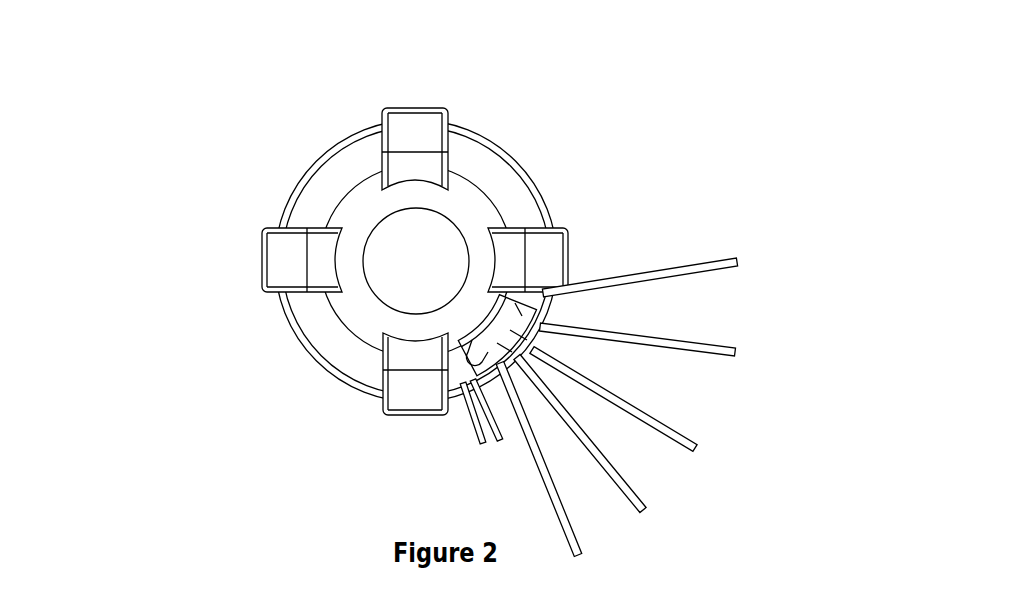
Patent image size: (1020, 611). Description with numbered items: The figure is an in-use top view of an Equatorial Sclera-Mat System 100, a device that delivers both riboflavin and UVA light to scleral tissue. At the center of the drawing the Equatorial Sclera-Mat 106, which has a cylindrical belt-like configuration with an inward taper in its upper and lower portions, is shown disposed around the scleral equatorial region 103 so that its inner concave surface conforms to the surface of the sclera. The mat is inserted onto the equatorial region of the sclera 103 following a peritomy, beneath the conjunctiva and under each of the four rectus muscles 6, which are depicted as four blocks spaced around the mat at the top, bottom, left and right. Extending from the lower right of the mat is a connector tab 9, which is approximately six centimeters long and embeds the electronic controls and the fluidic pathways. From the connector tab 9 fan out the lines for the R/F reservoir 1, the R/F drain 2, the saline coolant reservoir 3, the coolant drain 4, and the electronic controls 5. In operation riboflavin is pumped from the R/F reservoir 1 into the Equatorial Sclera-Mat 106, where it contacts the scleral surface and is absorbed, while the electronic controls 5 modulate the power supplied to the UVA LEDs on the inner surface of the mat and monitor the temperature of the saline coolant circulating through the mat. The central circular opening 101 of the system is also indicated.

The Equatorial Sclera-Mat System 100 is at (193, 207).
The central bore 101 is at (430, 252).
The scleral equatorial region 103 is at (482, 203).
The Equatorial Sclera-Mat 106 is at (330, 185).
The rectus muscles 6 is at (547, 268).
The connector tab 9 is at (500, 328).
The R/F reservoir 1 is at (757, 269).
The R/F drain 2 is at (749, 363).
The saline coolant reservoir 3 is at (713, 459).
The coolant drain 4 is at (658, 522).
The electronic controls 5 is at (592, 568).